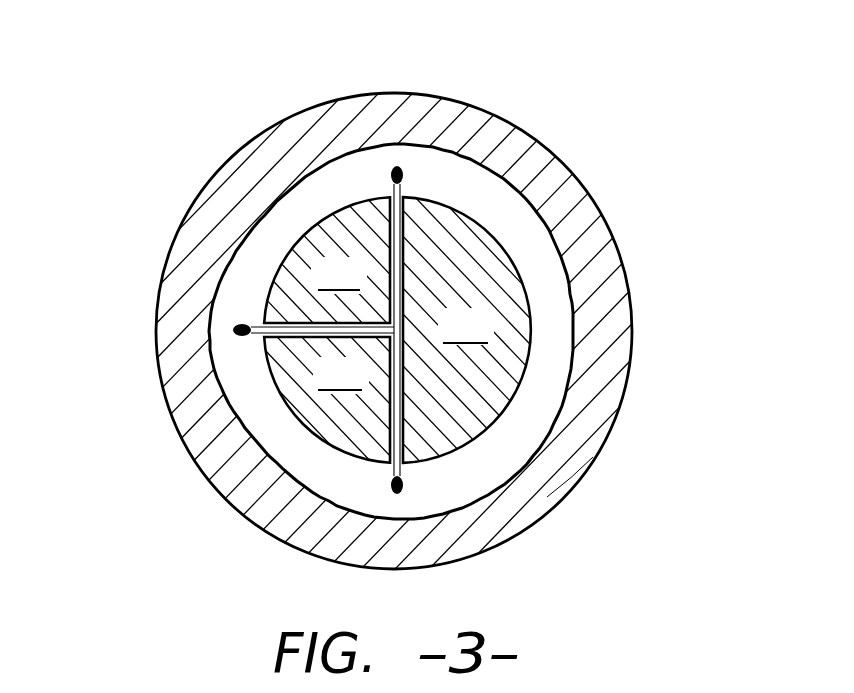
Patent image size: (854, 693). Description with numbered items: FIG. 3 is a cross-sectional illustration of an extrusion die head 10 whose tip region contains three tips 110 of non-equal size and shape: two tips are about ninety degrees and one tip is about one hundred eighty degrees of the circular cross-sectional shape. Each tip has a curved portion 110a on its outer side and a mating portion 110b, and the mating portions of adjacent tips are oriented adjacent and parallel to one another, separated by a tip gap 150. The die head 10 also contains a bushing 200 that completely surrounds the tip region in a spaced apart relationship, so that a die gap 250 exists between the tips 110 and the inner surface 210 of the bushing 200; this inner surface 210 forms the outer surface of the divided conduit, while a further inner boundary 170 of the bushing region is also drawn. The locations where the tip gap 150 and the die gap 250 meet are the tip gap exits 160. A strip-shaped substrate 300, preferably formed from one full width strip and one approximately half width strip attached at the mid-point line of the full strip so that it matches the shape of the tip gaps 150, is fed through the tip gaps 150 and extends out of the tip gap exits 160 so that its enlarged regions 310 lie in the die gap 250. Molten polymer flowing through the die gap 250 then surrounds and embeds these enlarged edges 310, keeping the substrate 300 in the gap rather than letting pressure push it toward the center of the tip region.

The extrusion die head 10 is at (638, 93).
The tips 110 is at (403, 330).
The curved portion 110a is at (337, 210).
The mating portion 110b is at (258, 276).
The tip gap 150 is at (450, 212).
The tip gap exits 160 is at (408, 190).
The inner surface of sheath 170 is at (573, 256).
The bushing 200 is at (603, 333).
The inner surface 210 is at (563, 400).
The die gap 250 is at (277, 227).
The strip-shaped substrate 300 is at (385, 516).
The enlarged regions 310 is at (405, 485).